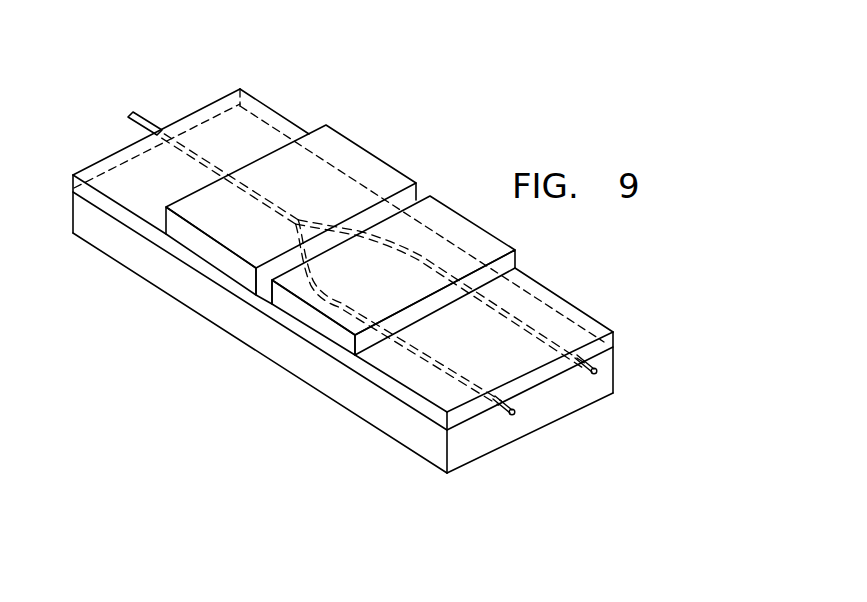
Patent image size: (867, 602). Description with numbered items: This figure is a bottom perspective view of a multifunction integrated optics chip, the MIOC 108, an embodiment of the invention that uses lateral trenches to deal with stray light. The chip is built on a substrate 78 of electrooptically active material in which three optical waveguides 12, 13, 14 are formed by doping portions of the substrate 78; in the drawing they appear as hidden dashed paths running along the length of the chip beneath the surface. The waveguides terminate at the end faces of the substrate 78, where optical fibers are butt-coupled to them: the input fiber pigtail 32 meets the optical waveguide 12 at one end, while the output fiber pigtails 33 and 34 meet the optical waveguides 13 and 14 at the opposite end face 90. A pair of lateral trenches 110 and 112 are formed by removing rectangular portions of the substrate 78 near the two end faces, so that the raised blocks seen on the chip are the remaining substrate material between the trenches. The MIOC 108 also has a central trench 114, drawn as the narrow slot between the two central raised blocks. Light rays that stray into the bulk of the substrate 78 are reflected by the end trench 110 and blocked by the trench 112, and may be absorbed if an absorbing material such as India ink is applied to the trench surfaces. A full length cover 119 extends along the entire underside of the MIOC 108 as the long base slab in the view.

The optical waveguide 12 is at (187, 153).
The optical waveguide 13 is at (500, 305).
The optical waveguide 14 is at (421, 358).
The input fiber pigtail 32 is at (140, 112).
The output fiber pigtail 33 is at (590, 361).
The output fiber pigtail 34 is at (503, 412).
The substrate 78 is at (356, 158).
The end face 90 is at (550, 398).
The MIOC 108 is at (462, 156).
The lateral trench 110 is at (250, 133).
The lateral trench 112 is at (565, 331).
The central trench 114 is at (266, 283).
The full length cover 119 is at (183, 302).